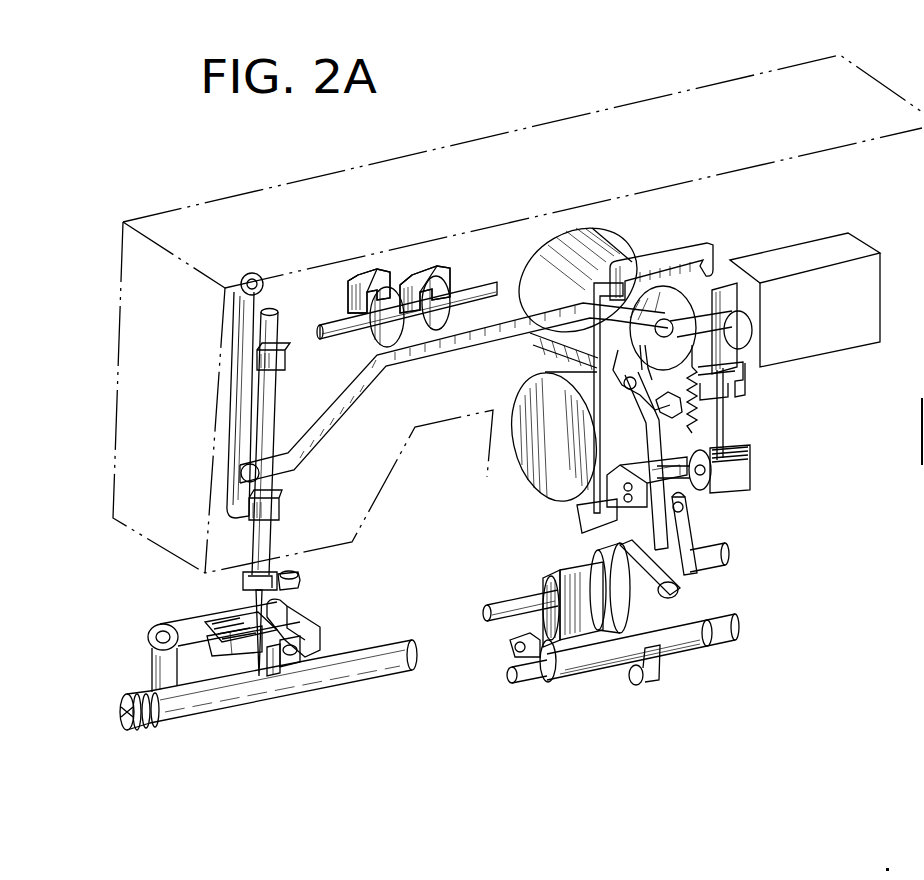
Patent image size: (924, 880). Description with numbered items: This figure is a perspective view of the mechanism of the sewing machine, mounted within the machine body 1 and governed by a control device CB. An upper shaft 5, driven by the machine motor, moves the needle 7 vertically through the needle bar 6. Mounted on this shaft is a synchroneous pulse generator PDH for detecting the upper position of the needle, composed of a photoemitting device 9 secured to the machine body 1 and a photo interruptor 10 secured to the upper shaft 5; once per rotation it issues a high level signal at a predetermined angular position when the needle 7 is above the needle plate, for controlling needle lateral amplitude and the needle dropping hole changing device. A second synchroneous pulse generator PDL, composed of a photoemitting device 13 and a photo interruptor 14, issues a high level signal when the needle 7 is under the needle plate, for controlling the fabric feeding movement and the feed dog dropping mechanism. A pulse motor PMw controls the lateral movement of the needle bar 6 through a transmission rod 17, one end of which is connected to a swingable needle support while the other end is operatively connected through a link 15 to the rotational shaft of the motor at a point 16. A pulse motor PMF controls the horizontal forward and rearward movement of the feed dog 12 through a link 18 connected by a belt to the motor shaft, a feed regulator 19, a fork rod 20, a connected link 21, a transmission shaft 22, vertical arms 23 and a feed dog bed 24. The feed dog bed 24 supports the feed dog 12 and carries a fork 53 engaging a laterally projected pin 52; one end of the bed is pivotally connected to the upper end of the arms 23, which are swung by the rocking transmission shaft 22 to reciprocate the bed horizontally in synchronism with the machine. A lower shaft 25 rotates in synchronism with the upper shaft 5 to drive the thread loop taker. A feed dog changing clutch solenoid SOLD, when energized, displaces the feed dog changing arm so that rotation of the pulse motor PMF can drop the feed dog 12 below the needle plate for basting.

The machine body 1 is at (230, 212).
The upper shaft 5 is at (337, 320).
The needle bar 6 is at (267, 537).
The needle 7 is at (255, 598).
The photoemitting device 9 is at (347, 293).
The photo interruptor 10 is at (378, 337).
The feed dog 12 is at (243, 657).
The photoemitting device 13 is at (443, 273).
The photo interruptor 14 is at (433, 320).
The link 15 is at (653, 350).
The connection point 16 is at (703, 245).
The transmission rod 17 is at (390, 360).
The link 18 is at (690, 548).
The feed regulator 19 is at (630, 617).
The fork rod 20 is at (535, 627).
The connected link 21 is at (630, 677).
The transmission shaft 22 is at (390, 653).
The vertical arms 23 is at (152, 665).
The feed dog bed 24 is at (305, 640).
The lower shaft 25 is at (502, 603).
The laterally projected pin 52 is at (297, 663).
The fork 53 is at (280, 663).
The synchroneous pulse generator for detecting the upper position of the needle PDH is at (363, 278).
The synchroneous pulse generator for detecting the lower position of the needle PDL is at (413, 262).
The pulse motor for controlling needle bar lateral movement PMw is at (547, 250).
The pulse motor for controlling fabric feeding movement PMF is at (542, 467).
The feed dog changing clutch solenoid SOLD is at (697, 463).
The control device CB is at (783, 257).